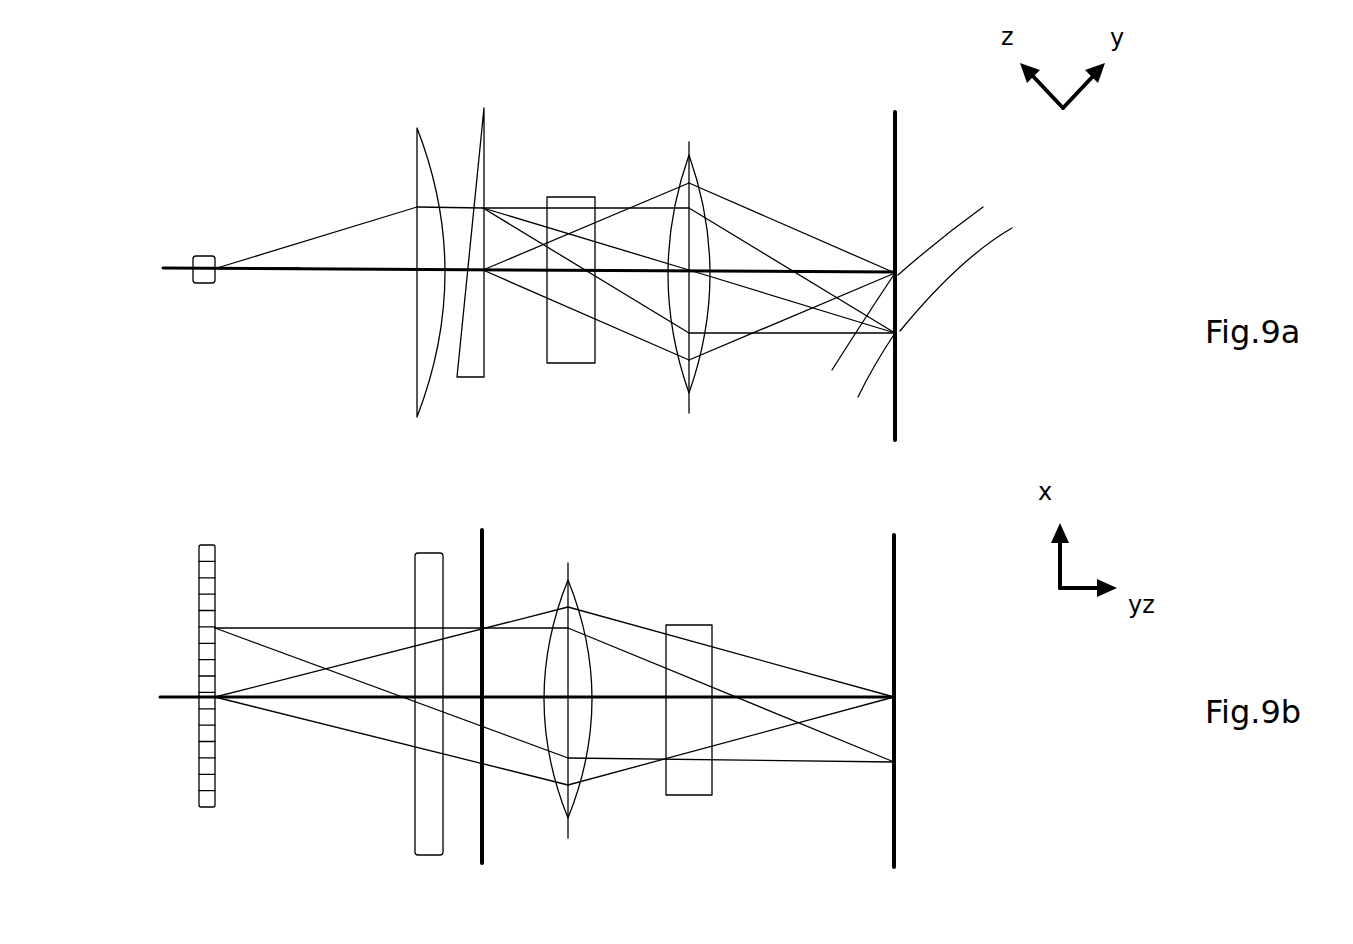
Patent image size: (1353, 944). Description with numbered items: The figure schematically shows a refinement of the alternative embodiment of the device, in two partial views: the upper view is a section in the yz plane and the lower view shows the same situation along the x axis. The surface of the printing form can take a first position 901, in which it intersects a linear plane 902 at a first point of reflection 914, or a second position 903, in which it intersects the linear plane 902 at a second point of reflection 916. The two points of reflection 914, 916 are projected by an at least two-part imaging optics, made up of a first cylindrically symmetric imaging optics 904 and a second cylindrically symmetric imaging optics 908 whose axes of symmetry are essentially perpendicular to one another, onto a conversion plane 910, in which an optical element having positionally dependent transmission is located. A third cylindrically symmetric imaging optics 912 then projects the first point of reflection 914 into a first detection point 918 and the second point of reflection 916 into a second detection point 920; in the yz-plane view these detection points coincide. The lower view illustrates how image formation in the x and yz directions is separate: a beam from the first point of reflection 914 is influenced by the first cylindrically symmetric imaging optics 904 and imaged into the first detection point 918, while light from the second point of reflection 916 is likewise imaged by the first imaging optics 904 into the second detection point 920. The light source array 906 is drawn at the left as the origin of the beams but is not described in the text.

In FIG. 9a, the first position 901 is at (947, 231).
In FIG. 9a, the linear plane 902 is at (902, 337).
In FIG. 9b, the linear plane 902 is at (903, 695).
In FIG. 9a, the second position 903 is at (972, 258).
In FIG. 9a, the first cylindrically symmetric imaging optics 904 is at (595, 373).
In FIG. 9b, the first cylindrically symmetric imaging optics 904 is at (577, 607).
In FIG. 9a, the light source array 906 is at (197, 285).
In FIG. 9b, the light source array 906 is at (194, 544).
In FIG. 9a, the second cylindrically symmetric imaging optics 908 is at (700, 378).
In FIG. 9b, the second cylindrically symmetric imaging optics 908 is at (741, 641).
In FIG. 9a, the conversion plane 910 is at (488, 378).
In FIG. 9b, the conversion plane 910 is at (487, 563).
In FIG. 9a, the third cylindrically symmetric imaging optics 912 is at (412, 365).
In FIG. 9b, the third cylindrically symmetric imaging optics 912 is at (408, 565).
In FIG. 9a, the first point of reflection 914 is at (895, 273).
In FIG. 9b, the first point of reflection 914 is at (897, 700).
In FIG. 9a, the second point of reflection 916 is at (900, 335).
In FIG. 9b, the second point of reflection 916 is at (898, 764).
In FIG. 9a, the first detection point 918 is at (217, 266).
In FIG. 9b, the first detection point 918 is at (218, 697).
In FIG. 9a, the second detection point 920 is at (219, 272).
In FIG. 9b, the second detection point 920 is at (215, 628).